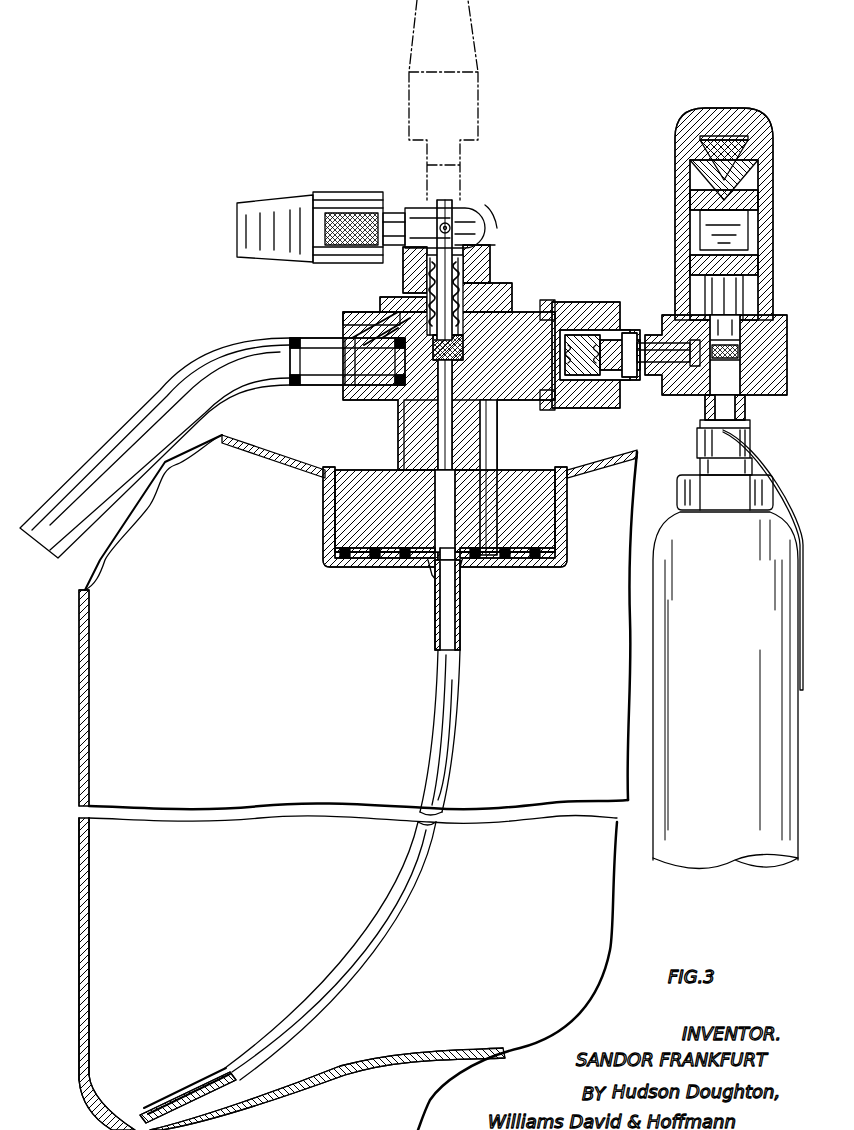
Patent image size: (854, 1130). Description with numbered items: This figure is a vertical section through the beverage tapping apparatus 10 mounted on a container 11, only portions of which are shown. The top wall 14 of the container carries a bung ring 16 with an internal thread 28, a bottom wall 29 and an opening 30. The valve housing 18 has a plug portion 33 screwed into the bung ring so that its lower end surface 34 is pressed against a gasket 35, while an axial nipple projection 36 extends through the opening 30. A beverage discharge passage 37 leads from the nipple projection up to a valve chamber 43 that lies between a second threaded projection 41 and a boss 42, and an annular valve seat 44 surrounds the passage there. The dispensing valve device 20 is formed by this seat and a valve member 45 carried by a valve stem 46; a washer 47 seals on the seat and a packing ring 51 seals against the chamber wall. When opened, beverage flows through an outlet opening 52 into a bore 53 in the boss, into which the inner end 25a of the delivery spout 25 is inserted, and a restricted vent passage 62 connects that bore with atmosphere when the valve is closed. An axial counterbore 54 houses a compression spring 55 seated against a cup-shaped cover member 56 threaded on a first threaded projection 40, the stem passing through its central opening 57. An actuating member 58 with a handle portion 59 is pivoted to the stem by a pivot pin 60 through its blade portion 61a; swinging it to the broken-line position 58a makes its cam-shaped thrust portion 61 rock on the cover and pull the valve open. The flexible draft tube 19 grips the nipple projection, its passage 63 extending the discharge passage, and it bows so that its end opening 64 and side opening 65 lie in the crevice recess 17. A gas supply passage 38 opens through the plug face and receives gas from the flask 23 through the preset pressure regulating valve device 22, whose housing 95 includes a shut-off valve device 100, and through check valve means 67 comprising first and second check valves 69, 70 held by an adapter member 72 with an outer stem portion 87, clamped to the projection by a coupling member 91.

The beverage tapping apparatus 10 is at (392, 431).
The container 11 is at (73, 737).
The top wall 14 is at (280, 445).
The bung ring 16 is at (325, 532).
The crevice recess 17 is at (115, 1105).
The valve housing 18 is at (548, 305).
The draft tube 19 is at (455, 708).
The dispensing valve device 20 is at (522, 305).
The preset pressure regulating valve device 22 is at (777, 232).
The flask 23 is at (723, 848).
The delivery spout 25 is at (228, 330).
The inner end of delivery spout 25a is at (345, 402).
The internal thread 28 is at (330, 504).
The bottom wall of bung ring 29 is at (335, 570).
The opening 30 is at (405, 575).
The plug portion 33 is at (540, 458).
The lower end surface 34 is at (432, 548).
The gasket 35 is at (538, 568).
The nipple projection 36 is at (462, 570).
The beverage discharge passage 37 is at (442, 445).
The gas supply passage 38 is at (492, 432).
The first threaded projection 40 is at (404, 282).
The second threaded projection 41 is at (566, 312).
The boss 42 is at (360, 318).
The valve chamber 43 is at (484, 303).
The valve seat 44 is at (445, 398).
The valve member 45 is at (492, 282).
The valve stem 46 is at (440, 297).
The washer 47 is at (458, 460).
The packing ring 51 is at (466, 352).
The outlet opening 52 is at (398, 380).
The bore 53 is at (410, 358).
The axial counterbore 54 is at (484, 240).
The compression spring 55 is at (486, 258).
The cover member 56 is at (405, 262).
The central opening 57 is at (480, 222).
The actuating member 58 is at (330, 205).
The elevated position of actuating member 58a is at (470, 98).
The handle portion 59 is at (282, 205).
The pivot pin 60 is at (445, 222).
The cam-shaped thrust portion 61 is at (484, 205).
The blade portion 61a is at (432, 218).
The vent passage 62 is at (402, 318).
The passage of draft tube 63 is at (468, 632).
The end opening 64 is at (140, 1113).
The side opening 65 is at (162, 1095).
The check valve means 67 is at (598, 412).
The first check valve 69 is at (630, 333).
The second check valve 70 is at (584, 312).
The adapter member 72 is at (622, 382).
The outer stem portion 87 is at (656, 343).
The coupling member 91 is at (612, 318).
The housing of regulating valve device 95 is at (784, 325).
The shut-off valve device 100 is at (748, 438).